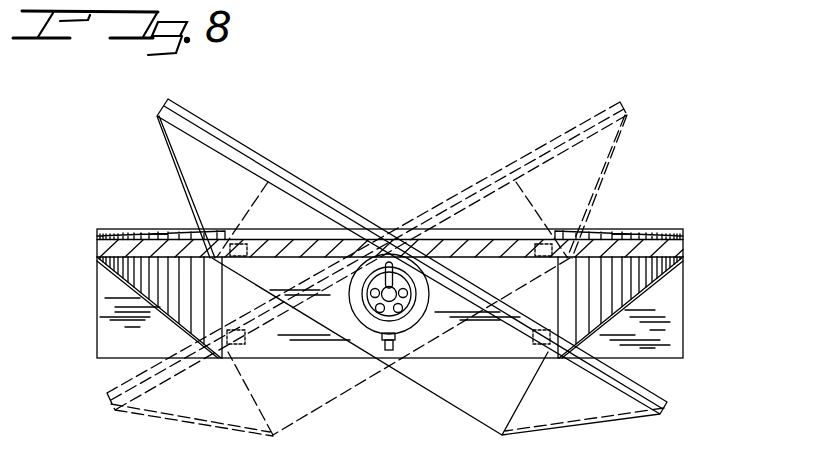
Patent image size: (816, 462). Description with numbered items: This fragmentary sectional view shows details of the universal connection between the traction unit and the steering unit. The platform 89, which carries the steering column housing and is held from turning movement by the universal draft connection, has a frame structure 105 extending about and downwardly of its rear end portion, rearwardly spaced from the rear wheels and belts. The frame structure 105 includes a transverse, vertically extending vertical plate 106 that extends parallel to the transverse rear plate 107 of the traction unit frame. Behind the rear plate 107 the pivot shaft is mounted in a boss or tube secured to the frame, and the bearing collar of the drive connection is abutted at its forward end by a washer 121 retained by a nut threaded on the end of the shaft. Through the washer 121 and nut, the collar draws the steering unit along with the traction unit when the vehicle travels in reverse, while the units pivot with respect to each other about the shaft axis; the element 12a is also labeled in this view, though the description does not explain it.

The vertical plate 106 is at (303, 230).
The platform 89 is at (613, 239).
The frame structure 105 is at (125, 287).
The transverse rear plate 107 is at (668, 340).
The washer 121 is at (373, 312).
The hub insert 12a is at (403, 312).